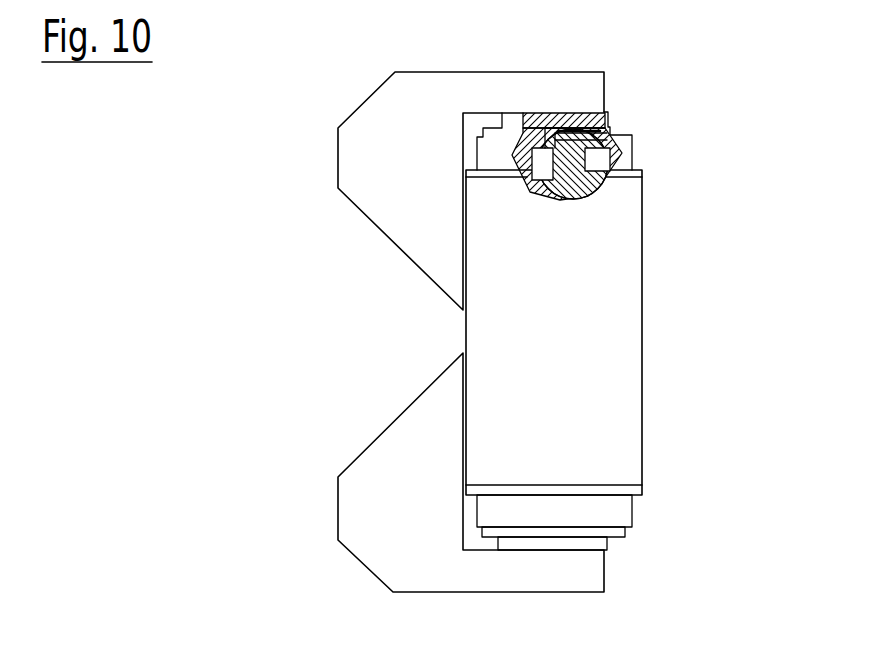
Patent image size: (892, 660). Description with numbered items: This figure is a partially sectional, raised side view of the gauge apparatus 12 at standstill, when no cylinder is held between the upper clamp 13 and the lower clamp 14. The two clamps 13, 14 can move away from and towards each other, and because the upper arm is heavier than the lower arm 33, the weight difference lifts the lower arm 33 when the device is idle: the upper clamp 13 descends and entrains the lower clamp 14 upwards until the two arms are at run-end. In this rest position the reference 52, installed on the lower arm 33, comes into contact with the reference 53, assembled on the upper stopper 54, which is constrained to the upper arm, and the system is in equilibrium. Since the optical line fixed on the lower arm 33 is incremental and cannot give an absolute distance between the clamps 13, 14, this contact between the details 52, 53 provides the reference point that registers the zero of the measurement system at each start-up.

The fastening assembly 12 is at (292, 358).
The upper clamp 13 is at (368, 173).
The lower clamp 14 is at (367, 477).
The lower arm 33 is at (626, 181).
The reference 52 is at (587, 137).
The reference 53 is at (595, 131).
The upper stopper 54 is at (600, 127).